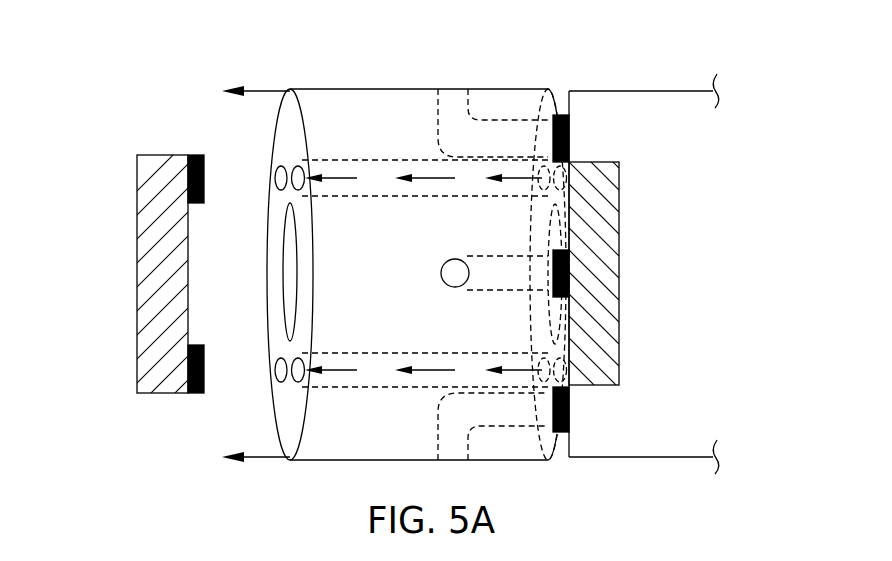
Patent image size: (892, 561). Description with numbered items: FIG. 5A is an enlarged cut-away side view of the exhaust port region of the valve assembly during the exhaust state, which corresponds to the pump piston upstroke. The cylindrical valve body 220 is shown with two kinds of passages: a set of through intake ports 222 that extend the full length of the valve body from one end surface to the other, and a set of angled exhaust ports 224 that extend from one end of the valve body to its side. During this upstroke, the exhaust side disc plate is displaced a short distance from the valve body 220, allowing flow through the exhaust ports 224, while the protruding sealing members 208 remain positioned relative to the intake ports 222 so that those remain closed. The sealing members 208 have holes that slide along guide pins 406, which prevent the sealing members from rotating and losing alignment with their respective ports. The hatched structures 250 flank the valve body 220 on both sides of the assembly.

The valve body 220 is at (362, 102).
The intake ports 222 is at (452, 136).
The exhaust ports 224 is at (352, 198).
The sealing members 208 is at (204, 188).
The insulation blocks 250 is at (158, 203).
The guide pins 406 is at (667, 90).